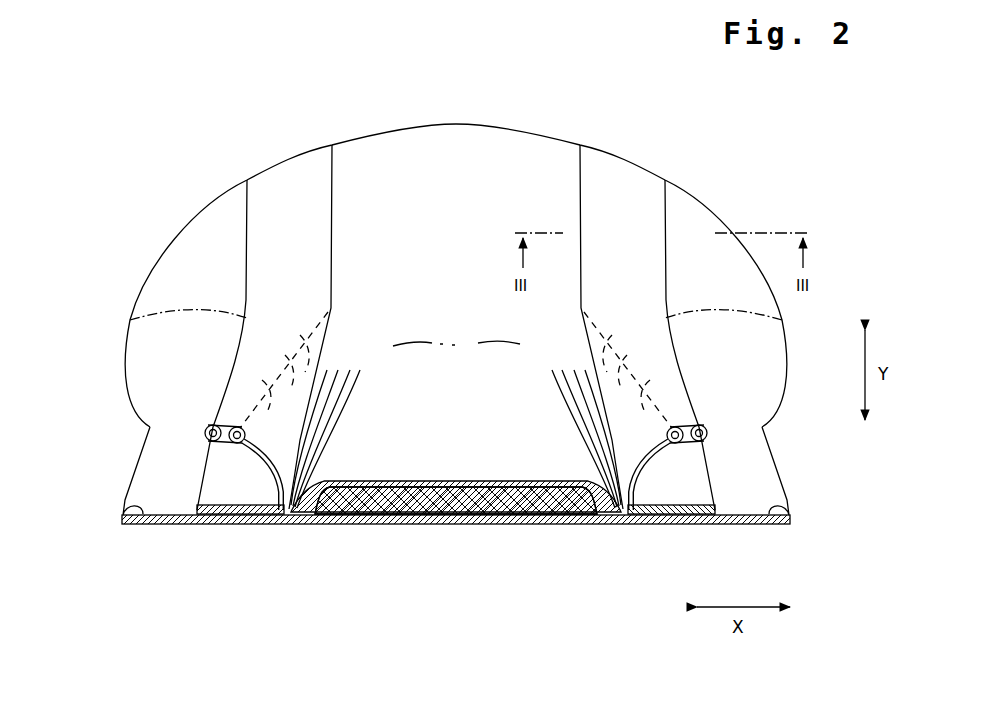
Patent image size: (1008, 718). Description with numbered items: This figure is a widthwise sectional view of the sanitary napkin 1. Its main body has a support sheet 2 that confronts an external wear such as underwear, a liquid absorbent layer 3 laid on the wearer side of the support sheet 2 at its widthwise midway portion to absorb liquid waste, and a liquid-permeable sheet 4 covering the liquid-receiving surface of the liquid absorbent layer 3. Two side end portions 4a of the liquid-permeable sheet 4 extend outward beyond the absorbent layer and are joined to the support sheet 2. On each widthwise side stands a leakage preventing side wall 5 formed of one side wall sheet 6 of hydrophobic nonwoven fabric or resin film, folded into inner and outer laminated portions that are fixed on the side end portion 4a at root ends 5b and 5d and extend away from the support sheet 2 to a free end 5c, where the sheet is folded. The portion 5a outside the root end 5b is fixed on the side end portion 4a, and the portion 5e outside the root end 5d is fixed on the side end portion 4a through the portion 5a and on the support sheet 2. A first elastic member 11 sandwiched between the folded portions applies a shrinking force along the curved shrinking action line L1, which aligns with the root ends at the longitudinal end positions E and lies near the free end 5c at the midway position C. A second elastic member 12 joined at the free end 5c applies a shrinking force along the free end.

The sanitary napkin 1 is at (708, 166).
The support sheet 2 is at (410, 527).
The liquid absorbent layer 3 is at (495, 506).
The liquid-permeable sheet 4 is at (425, 480).
The side end portion 4a is at (258, 527).
The leakage preventing side wall 5 is at (222, 385).
The portion extending outwardly of root end 5b 5a is at (220, 527).
The root end 5b is at (297, 527).
The free end 5c is at (204, 435).
The root end 5d is at (278, 497).
The portion extending outwardly of root end 5d 5e is at (140, 504).
The side wall sheet 6 is at (130, 320).
The first elastic member 11 is at (250, 430).
The second elastic member 12 is at (205, 452).
The longitudinally midway position C is at (205, 425).
The longitudinal end position of raised portion E is at (326, 309).
The shrinking action line L1 is at (338, 331).